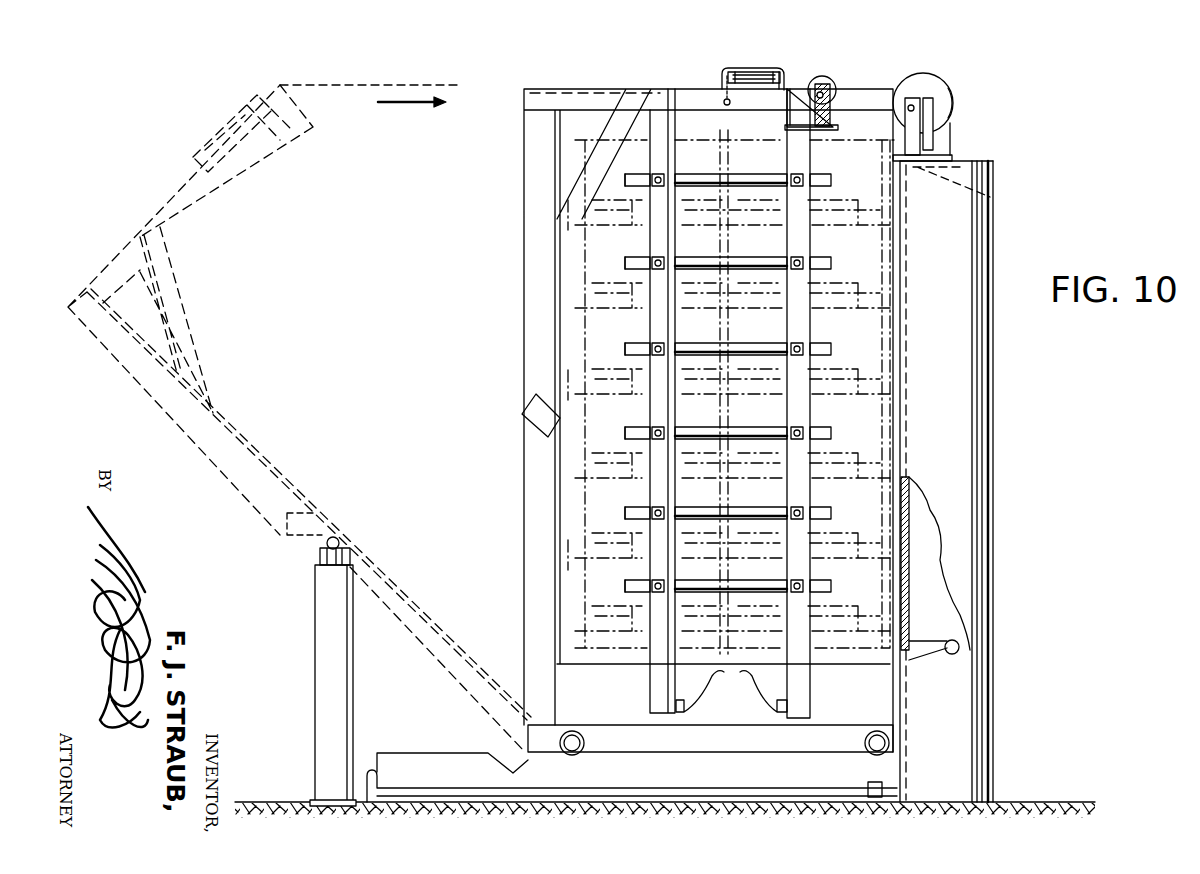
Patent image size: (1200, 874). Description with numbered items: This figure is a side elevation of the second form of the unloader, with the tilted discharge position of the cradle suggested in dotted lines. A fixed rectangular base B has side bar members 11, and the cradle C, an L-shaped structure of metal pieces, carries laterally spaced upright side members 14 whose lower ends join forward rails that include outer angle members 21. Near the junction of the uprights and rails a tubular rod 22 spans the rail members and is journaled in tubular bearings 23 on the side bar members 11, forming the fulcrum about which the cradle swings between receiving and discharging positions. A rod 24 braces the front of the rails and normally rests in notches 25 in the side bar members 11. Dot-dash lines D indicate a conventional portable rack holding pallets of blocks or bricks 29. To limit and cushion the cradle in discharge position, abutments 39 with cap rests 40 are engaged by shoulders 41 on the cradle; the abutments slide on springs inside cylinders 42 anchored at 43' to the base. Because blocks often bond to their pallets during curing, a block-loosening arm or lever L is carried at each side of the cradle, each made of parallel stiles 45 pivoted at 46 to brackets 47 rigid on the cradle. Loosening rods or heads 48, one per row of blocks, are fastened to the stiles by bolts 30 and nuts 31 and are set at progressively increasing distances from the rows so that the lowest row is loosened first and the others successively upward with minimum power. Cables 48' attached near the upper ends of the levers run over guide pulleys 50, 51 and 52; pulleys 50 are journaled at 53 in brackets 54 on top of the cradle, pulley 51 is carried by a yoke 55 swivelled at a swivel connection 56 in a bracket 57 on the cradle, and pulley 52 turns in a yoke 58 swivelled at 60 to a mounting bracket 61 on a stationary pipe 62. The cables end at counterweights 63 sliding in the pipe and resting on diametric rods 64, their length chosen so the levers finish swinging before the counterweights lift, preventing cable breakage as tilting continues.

The side bar members 11 is at (792, 778).
The side members 14 is at (528, 515).
The outer angle members 21 is at (760, 742).
The tubular rod 22 is at (585, 730).
The tubular bearings 23 is at (578, 756).
The rod 24 is at (879, 743).
The notches 25 is at (868, 756).
The blocks or bricks 29 is at (590, 330).
The bolts 30 is at (672, 192).
The nuts 31 is at (657, 190).
The abutments 39 is at (350, 552).
The cap rests 40 is at (338, 539).
The shoulders 41 is at (540, 414).
The cylinders 42 is at (333, 688).
The anchorage 43' is at (333, 820).
The parallel stiles 45 is at (655, 322).
The pivot 46 is at (696, 698).
The brackets 47 is at (762, 714).
The loosening rods or heads 48 is at (728, 383).
The cables 48' is at (641, 126).
The guide pulleys 50 is at (727, 76).
The guide pulley 51 is at (832, 90).
The guide pulley 52 is at (937, 105).
The journal 53 is at (752, 68).
The brackets 54 is at (784, 70).
The yoke 55 is at (832, 100).
The bracket plate 56 is at (838, 129).
The bracket 57 is at (802, 110).
The yoke 58 is at (912, 132).
The swivel 60 is at (990, 197).
The mounting bracket 61 is at (954, 158).
The stationary pipe or tube 62 is at (980, 410).
The counterweights 63 is at (920, 297).
The diametric rods 64 is at (959, 647).
The base B is at (680, 799).
The cradle C is at (520, 347).
The phantom lines D is at (860, 197).
The block-loosening arm or lever L is at (645, 391).